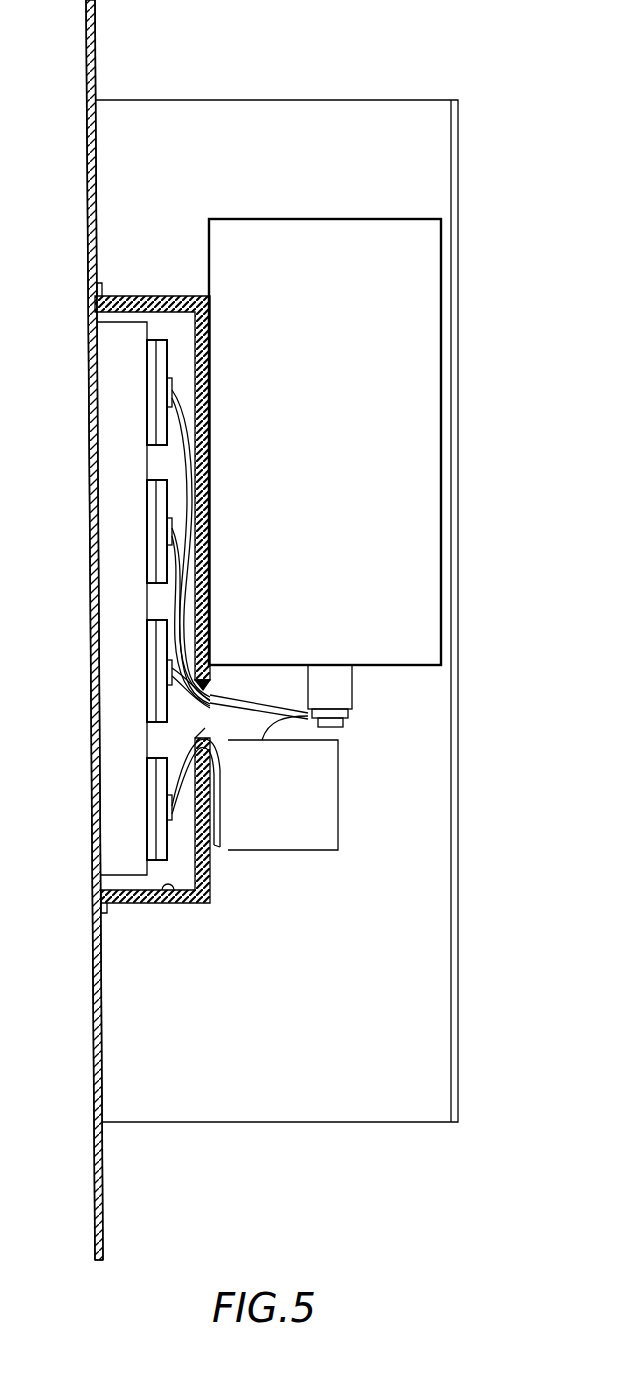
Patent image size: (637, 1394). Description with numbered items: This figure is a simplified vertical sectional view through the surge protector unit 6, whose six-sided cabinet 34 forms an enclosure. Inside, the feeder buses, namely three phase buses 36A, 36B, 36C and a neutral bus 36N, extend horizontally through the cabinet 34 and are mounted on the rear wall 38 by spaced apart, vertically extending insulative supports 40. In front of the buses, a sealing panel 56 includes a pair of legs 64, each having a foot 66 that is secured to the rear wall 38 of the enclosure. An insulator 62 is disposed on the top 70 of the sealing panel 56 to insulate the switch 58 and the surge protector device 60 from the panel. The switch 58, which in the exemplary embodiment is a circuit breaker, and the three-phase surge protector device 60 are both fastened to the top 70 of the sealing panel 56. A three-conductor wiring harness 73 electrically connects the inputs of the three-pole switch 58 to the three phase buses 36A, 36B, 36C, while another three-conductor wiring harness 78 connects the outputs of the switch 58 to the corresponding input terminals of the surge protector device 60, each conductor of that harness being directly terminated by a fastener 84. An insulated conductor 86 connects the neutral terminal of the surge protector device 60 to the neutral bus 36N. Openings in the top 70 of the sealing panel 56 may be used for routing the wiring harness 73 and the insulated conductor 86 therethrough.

The surge protector unit 6 is at (294, 63).
The cabinet 34 is at (462, 183).
The neutral bus 36N is at (150, 418).
The phase bus 36A is at (150, 565).
The phase bus 36B is at (150, 692).
The phase bus 36C is at (150, 830).
The rear wall 38 is at (96, 1004).
The insulative supports 40 is at (115, 752).
The sealing panel 56 is at (122, 322).
The switch 58 is at (335, 850).
The surge protector device 60 is at (385, 668).
The insulator 62 is at (203, 903).
The legs 64 is at (188, 312).
The foot 66 is at (97, 290).
The top 70 is at (192, 866).
The wiring harness 73 is at (238, 794).
The wiring harness 78 is at (270, 686).
The fastener 84 is at (340, 728).
The insulated conductor 86 is at (188, 432).